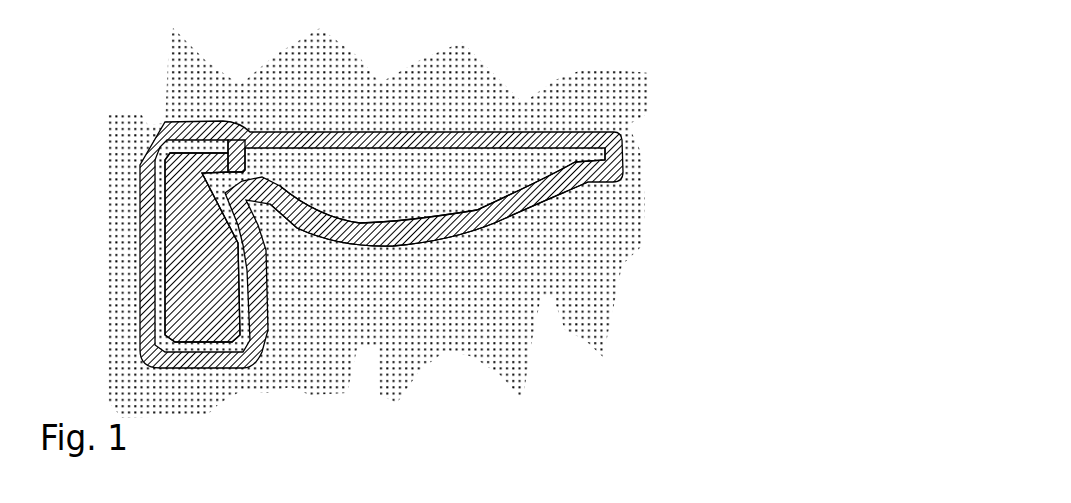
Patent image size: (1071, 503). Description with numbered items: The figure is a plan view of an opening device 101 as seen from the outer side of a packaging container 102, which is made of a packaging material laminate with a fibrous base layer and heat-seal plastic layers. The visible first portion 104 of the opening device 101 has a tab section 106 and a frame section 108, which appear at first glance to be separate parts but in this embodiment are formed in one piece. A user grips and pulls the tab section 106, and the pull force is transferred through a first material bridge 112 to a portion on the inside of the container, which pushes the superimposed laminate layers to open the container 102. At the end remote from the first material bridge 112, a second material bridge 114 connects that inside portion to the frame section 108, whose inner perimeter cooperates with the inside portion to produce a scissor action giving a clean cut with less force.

The opening device 101 is at (686, 80).
The packaging container 102 is at (600, 283).
The first portion 104 is at (285, 307).
The tab section 106 is at (190, 192).
The frame section 108 is at (468, 240).
The first material bridge 112 is at (237, 153).
The second material bridge 114 is at (612, 152).